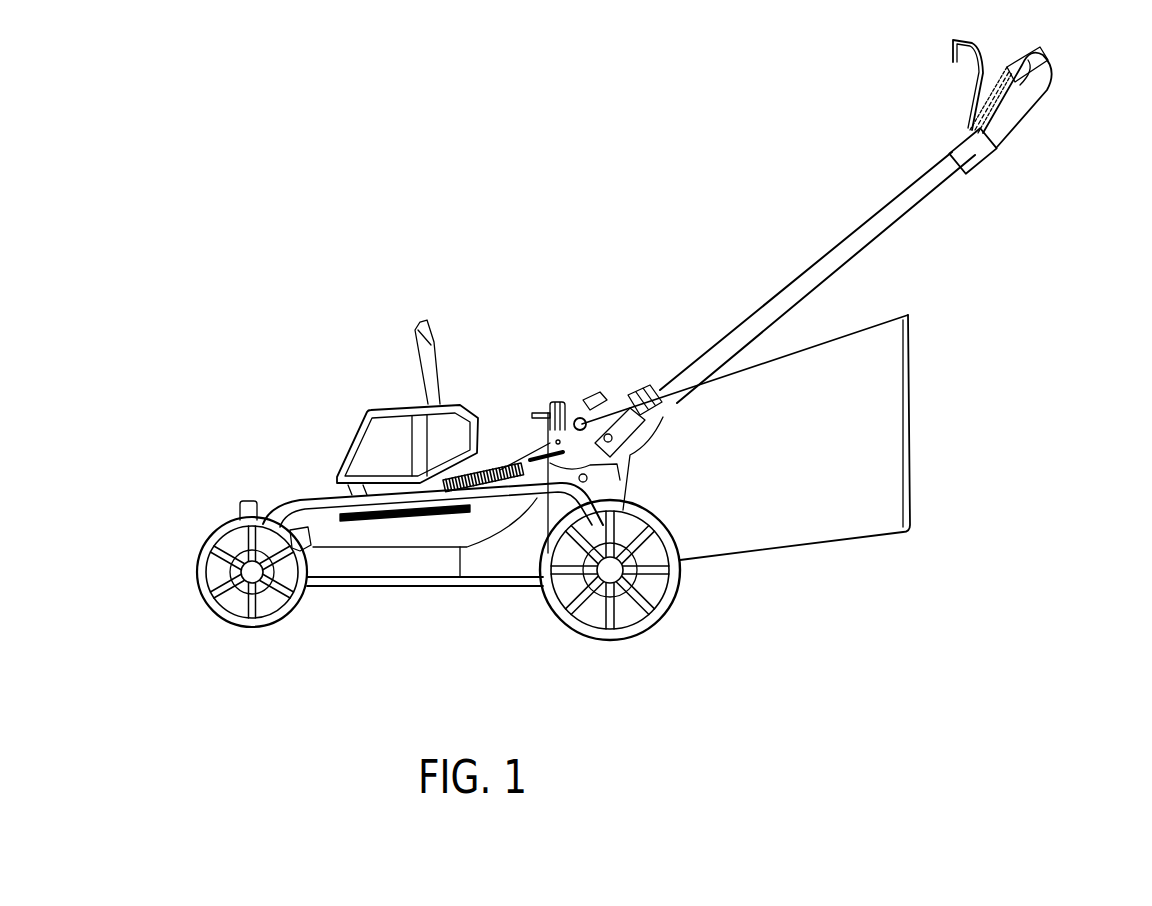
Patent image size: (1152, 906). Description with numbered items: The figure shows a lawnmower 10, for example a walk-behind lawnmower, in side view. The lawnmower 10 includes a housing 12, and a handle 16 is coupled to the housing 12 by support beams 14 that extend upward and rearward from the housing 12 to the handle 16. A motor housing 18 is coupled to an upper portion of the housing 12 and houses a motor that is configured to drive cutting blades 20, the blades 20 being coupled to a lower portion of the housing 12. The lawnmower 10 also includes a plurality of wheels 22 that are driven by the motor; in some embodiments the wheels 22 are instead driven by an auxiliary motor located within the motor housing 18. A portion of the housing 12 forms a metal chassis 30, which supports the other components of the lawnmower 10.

The lawnmower 10 is at (383, 262).
The housing 12 is at (305, 508).
The support beams 14 is at (793, 285).
The handle 16 is at (1032, 46).
The motor housing 18 is at (458, 403).
The cutting blades 20 is at (417, 580).
The wheels 22 is at (252, 627).
The metal chassis 30 is at (578, 420).